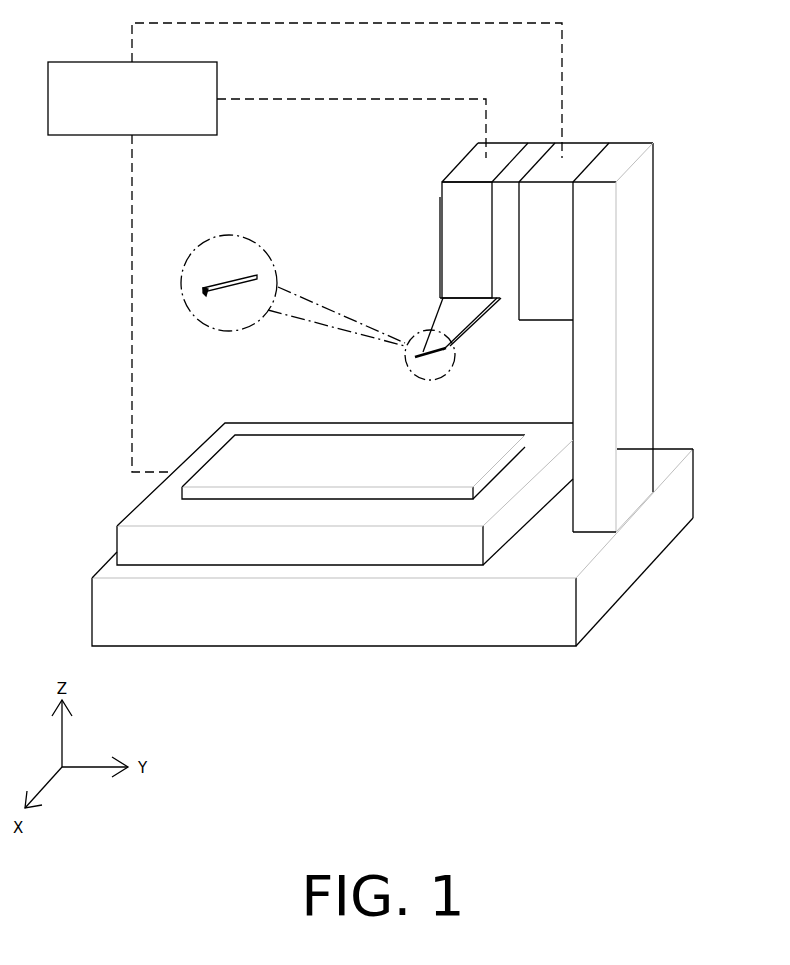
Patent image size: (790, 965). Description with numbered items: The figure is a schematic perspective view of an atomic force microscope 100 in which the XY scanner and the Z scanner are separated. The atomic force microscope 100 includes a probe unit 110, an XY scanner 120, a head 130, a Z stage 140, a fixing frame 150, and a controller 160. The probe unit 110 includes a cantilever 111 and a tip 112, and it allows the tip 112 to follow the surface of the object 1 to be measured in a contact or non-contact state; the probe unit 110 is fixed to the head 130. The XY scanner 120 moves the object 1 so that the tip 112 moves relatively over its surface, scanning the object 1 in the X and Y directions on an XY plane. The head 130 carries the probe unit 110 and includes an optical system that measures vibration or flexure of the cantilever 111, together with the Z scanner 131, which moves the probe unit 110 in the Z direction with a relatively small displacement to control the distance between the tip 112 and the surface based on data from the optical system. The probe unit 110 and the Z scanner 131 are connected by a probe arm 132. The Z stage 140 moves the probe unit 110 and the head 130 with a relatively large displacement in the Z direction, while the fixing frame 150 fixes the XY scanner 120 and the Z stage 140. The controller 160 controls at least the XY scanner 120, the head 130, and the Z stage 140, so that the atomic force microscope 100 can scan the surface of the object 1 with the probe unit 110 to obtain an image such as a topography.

The object to be measured 1 is at (252, 443).
The atomic force microscope 100 is at (701, 244).
The probe unit 110 is at (425, 366).
The cantilever 111 is at (225, 275).
The tip 112 is at (204, 294).
The XY scanner 120 is at (148, 510).
The head 130 is at (410, 267).
The Z scanner 131 is at (462, 217).
The probe arm 132 is at (443, 316).
The Z stage 140 is at (580, 152).
The fixing frame 150 is at (556, 634).
The controller 160 is at (200, 78).